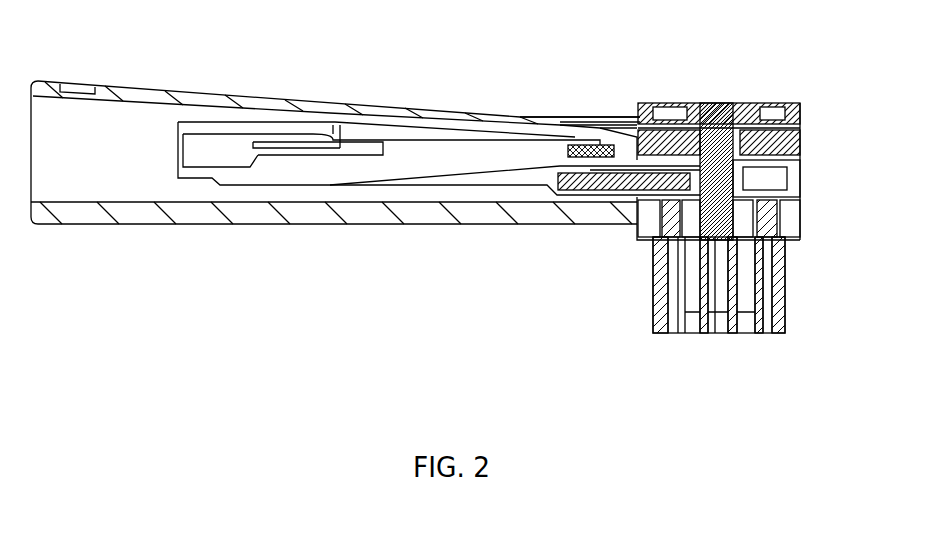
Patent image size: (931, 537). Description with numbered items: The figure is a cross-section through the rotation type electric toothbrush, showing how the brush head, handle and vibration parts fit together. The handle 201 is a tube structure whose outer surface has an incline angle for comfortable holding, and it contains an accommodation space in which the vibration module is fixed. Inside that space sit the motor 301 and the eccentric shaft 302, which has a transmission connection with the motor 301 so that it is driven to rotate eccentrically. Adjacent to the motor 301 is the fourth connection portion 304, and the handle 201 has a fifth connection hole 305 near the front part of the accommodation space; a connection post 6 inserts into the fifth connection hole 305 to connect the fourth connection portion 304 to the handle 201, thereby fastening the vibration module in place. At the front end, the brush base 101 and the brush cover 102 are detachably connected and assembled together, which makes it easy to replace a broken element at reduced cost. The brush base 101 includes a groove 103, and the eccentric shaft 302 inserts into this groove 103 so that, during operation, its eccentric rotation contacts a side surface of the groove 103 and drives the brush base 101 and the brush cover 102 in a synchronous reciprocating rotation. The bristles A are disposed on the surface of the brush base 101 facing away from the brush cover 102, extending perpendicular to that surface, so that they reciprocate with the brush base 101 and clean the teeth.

The connection post 6 is at (583, 144).
The brush base 101 is at (800, 210).
The brush cover 102 is at (799, 133).
The groove 103 is at (694, 125).
The handle 201 is at (616, 133).
The motor 301 is at (558, 173).
The eccentric shaft 302 is at (599, 178).
The fourth connection portion 304 is at (572, 143).
The fifth connection hole 305 is at (601, 143).
The bristles A is at (768, 252).